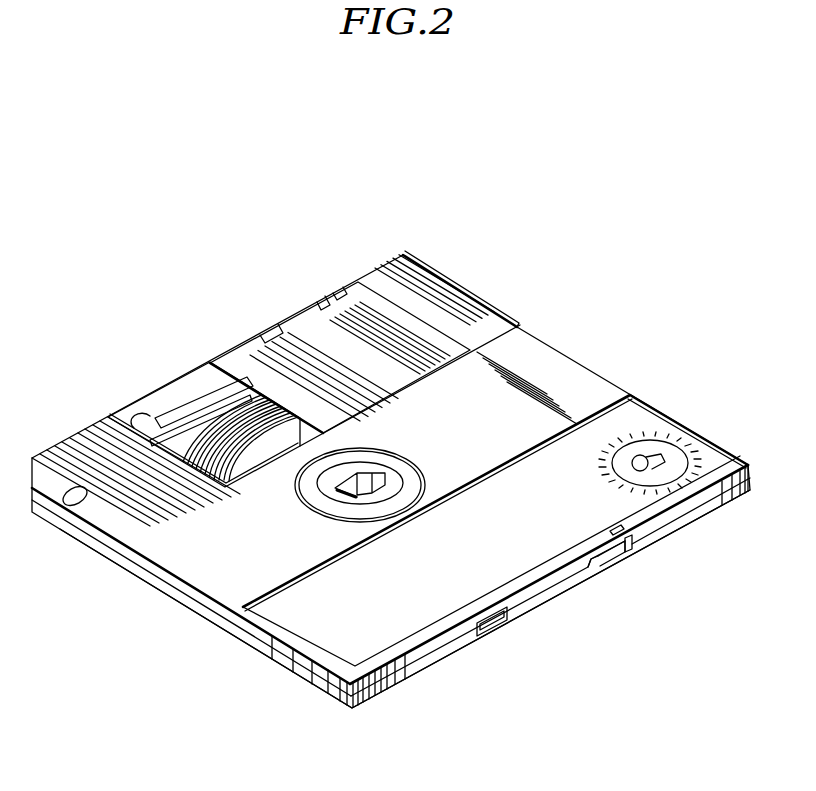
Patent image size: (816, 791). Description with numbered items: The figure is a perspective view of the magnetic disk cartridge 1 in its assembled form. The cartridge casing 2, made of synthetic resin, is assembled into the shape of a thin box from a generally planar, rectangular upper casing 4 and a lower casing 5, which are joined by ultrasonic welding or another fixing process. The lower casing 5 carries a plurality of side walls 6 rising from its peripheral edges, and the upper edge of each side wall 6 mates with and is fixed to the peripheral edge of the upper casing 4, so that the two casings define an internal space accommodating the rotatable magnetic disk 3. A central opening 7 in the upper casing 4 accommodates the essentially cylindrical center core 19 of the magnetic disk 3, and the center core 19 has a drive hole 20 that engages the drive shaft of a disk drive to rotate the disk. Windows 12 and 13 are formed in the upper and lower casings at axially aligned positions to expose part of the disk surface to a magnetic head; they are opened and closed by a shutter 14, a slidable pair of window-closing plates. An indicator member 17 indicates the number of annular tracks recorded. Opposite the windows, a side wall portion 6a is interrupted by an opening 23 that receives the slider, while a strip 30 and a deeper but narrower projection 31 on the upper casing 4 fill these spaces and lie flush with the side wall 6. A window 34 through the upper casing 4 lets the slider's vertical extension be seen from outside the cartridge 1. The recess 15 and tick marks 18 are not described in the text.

The magnetic disk cartridge 1 is at (683, 301).
The cartridge casing 2 is at (610, 372).
The magnetic disk 3 is at (220, 463).
The upper casing 4 is at (205, 580).
The lower casing 5 is at (225, 632).
The side wall 6 is at (300, 680).
The side wall portion 6a is at (538, 602).
The central opening 7 is at (425, 487).
The window 12 is at (190, 402).
The window 13 is at (170, 443).
The shutter 14 is at (367, 302).
The recess 15 is at (682, 460).
The indicator member 17 is at (665, 450).
The dial 18 is at (648, 437).
The center core 19 is at (368, 466).
The drive hole 20 is at (373, 478).
The opening 23 is at (633, 548).
The strip 30 is at (602, 557).
The projection 31 is at (628, 555).
The window 34 is at (612, 527).